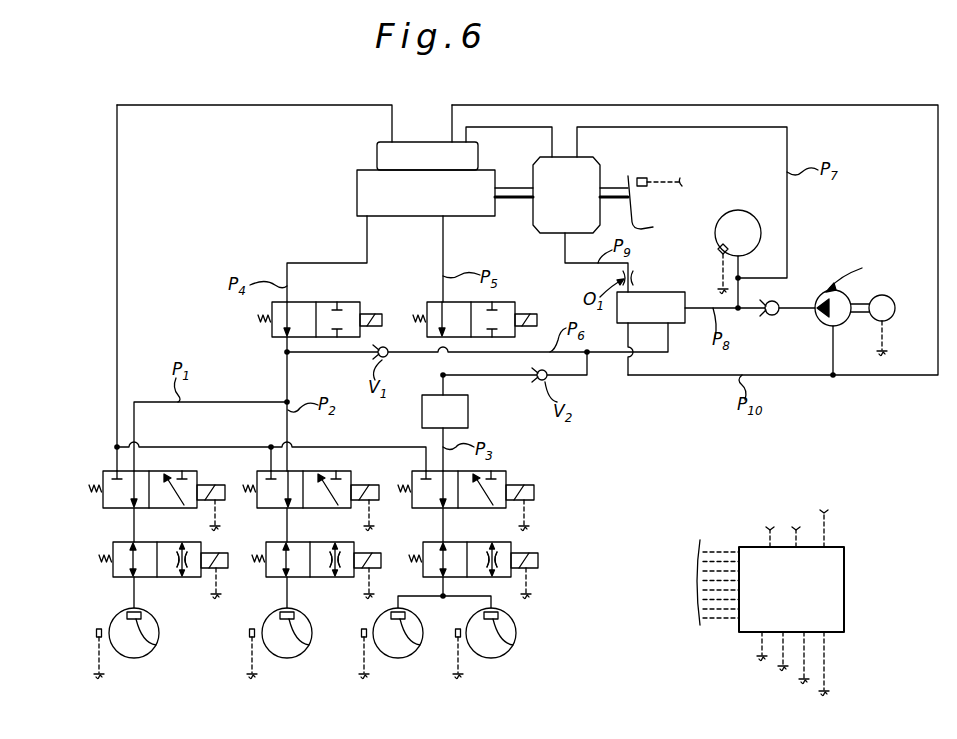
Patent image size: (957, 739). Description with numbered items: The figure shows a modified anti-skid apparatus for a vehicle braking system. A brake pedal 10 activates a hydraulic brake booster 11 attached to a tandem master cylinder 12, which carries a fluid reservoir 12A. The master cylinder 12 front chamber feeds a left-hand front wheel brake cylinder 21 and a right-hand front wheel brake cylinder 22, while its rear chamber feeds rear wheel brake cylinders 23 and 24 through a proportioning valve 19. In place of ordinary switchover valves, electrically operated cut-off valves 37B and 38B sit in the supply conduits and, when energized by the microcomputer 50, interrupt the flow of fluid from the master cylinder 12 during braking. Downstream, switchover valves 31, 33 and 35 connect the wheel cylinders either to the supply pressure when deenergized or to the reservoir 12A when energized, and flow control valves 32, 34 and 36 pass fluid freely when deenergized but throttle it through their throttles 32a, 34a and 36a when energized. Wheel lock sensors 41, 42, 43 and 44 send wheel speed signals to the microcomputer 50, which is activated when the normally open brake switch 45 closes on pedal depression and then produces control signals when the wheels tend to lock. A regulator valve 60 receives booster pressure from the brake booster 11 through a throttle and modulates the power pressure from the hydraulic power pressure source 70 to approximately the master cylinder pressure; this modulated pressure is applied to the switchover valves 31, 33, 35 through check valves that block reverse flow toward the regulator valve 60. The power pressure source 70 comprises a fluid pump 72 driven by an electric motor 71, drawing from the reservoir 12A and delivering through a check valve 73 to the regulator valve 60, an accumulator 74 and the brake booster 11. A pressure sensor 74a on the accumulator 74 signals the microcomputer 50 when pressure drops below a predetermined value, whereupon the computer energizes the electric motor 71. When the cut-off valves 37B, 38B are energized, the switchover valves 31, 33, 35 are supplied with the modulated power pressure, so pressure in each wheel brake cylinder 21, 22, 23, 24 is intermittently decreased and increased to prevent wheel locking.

The brake pedal 10 is at (664, 229).
The hydraulic brake booster 11 is at (538, 223).
The tandem master cylinder 12 is at (357, 186).
The fluid reservoir 12A is at (377, 150).
The proportioning valve 19 is at (468, 412).
The left-hand front wheel brake cylinder 21 is at (155, 645).
The right-hand front wheel brake cylinder 22 is at (309, 646).
The rear wheel brake cylinder 23 is at (414, 618).
The rear wheel brake cylinder 24 is at (514, 648).
The switchover valve 31 is at (103, 500).
The flow control valve 32 is at (113, 565).
The throttle 32a is at (185, 578).
The switchover valve 33 is at (262, 508).
The flow control valve 34 is at (268, 577).
The throttle 34a is at (336, 578).
The switchover valve 35 is at (503, 472).
The flow control valve 36 is at (511, 550).
The throttle 36a is at (500, 578).
The cut-off valve 37B is at (365, 302).
The cut-off valve 38B is at (518, 302).
The wheel lock sensor 41 is at (96, 633).
The wheel lock sensor 42 is at (249, 633).
The wheel lock sensor 43 is at (361, 640).
The wheel lock sensor 44 is at (455, 640).
The brake switch 45 is at (645, 178).
The microcomputer 50 is at (845, 575).
The regulator valve 60 is at (660, 292).
The hydraulic power pressure source 70 is at (848, 262).
The electric motor 71 is at (885, 295).
The fluid pump 72 is at (836, 290).
The check valve 73 is at (775, 316).
The accumulator 74 is at (736, 210).
The pressure sensor 74a is at (720, 247).